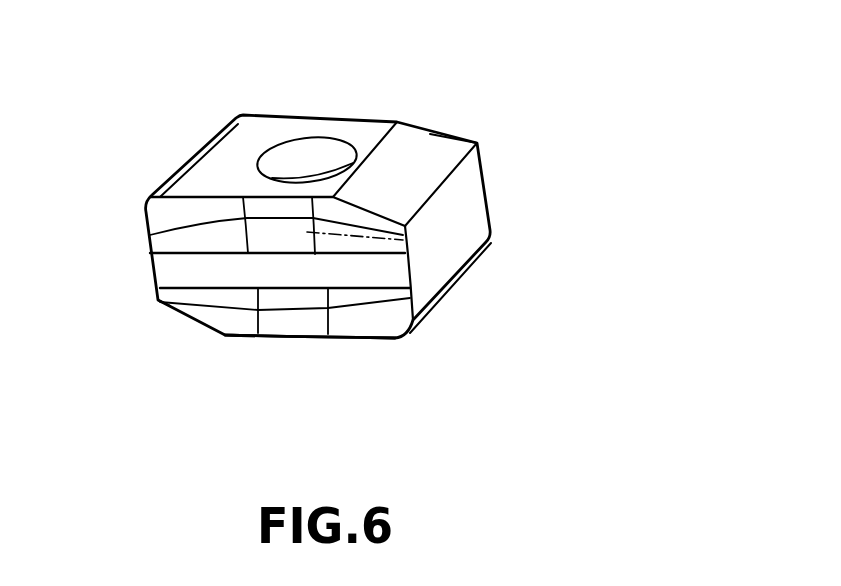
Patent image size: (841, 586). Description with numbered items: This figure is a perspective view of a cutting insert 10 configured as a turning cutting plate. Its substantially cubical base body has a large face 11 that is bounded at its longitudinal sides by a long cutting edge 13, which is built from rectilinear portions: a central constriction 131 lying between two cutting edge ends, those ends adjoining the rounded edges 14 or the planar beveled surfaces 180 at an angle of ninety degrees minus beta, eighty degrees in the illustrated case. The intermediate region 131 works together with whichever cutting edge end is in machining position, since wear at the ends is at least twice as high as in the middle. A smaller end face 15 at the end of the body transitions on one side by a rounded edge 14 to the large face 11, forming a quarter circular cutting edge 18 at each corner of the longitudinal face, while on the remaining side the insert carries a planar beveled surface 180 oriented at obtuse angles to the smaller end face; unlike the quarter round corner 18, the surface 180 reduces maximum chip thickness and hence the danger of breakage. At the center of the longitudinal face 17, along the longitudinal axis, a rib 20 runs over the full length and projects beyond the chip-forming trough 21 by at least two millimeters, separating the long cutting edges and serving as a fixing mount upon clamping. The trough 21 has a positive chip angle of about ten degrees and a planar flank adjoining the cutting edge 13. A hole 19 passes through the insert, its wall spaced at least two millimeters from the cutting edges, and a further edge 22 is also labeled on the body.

The cutting insert 10 is at (453, 118).
The large face 11 is at (377, 125).
The long cutting edge 13 is at (311, 338).
The central constriction 131 is at (297, 190).
The rounded edge 14 is at (172, 180).
The smaller end face 15 is at (460, 187).
The longitudinal face 17 is at (287, 320).
The quarter circular cutting edge 18 is at (410, 333).
The beveled surface 180 is at (437, 152).
The hole 19 is at (292, 150).
The rib 20 is at (167, 265).
The chip-forming trough 21 is at (258, 210).
The side edge 22 is at (413, 272).